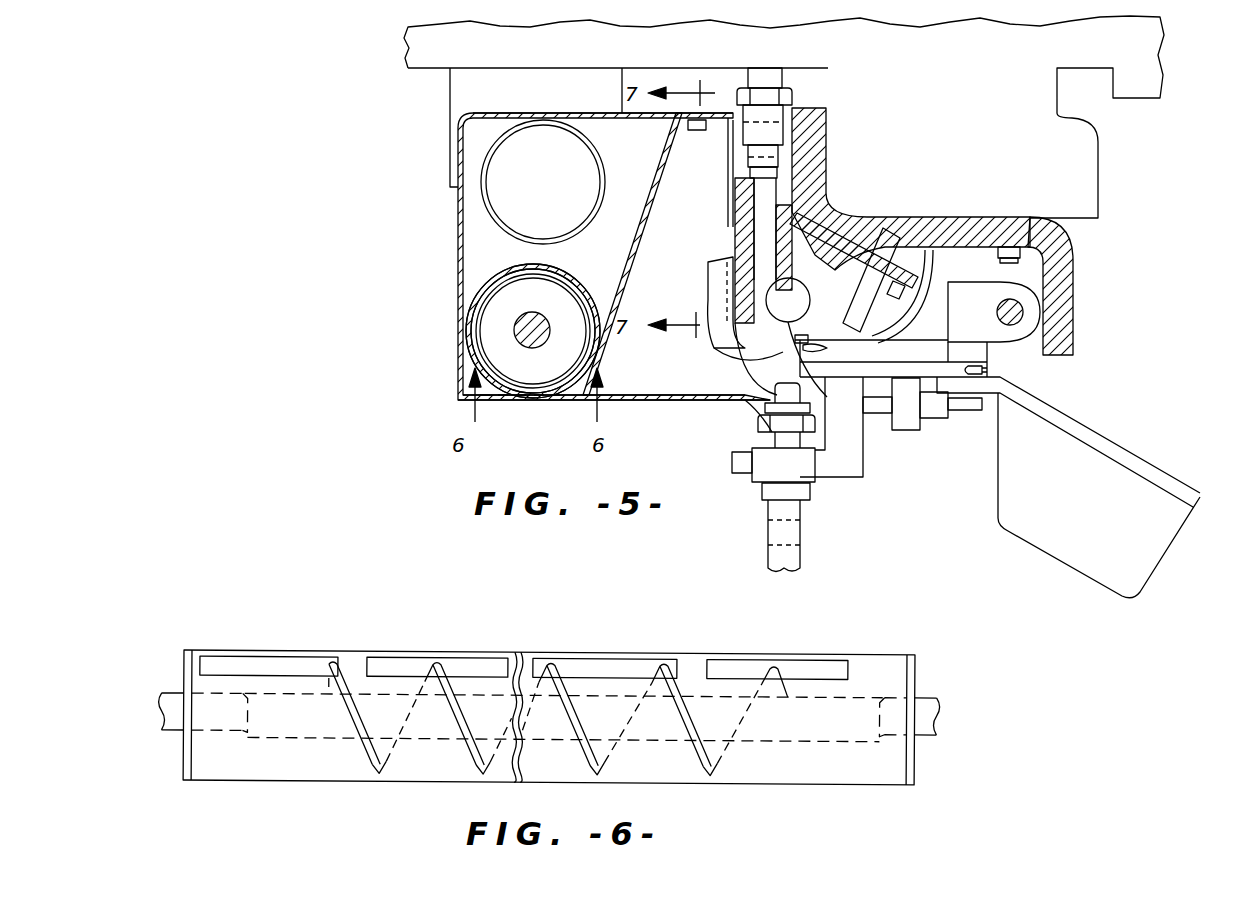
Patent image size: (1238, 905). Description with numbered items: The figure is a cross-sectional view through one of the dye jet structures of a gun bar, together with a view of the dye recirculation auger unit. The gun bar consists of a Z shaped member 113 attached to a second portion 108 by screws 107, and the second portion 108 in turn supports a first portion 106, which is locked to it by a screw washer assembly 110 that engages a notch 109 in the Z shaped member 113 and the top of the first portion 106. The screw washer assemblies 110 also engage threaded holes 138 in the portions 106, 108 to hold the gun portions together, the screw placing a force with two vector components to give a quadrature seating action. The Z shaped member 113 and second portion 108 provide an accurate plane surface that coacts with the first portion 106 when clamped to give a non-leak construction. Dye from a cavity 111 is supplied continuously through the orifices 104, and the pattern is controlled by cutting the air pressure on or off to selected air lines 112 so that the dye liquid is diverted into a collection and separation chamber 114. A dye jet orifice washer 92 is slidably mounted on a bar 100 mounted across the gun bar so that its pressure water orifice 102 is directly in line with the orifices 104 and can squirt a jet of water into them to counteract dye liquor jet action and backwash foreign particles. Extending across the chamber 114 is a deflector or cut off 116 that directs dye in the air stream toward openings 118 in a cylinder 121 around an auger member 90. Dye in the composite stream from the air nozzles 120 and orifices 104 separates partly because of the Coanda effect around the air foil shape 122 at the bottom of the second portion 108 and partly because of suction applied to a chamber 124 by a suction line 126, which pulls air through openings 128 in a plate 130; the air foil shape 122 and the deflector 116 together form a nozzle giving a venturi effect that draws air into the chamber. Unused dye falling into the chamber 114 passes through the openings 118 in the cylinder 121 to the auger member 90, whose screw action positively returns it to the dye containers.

In FIG. 6, the auger member 90 is at (370, 634).
In FIG. 5, the dye jet orifice washer 92 is at (835, 506).
In FIG. 5, the bar 100 is at (1013, 326).
In FIG. 5, the pressure water orifice 102 is at (752, 408).
In FIG. 5, the orifices of the gun bar 104 is at (798, 330).
In FIG. 5, the first portion 106 is at (823, 277).
In FIG. 5, the screws 107 is at (836, 145).
In FIG. 5, the second portion 108 is at (735, 243).
In FIG. 5, the notch 109 is at (922, 235).
In FIG. 5, the screw washer assembly 110 is at (905, 278).
In FIG. 5, the cavity 111 is at (788, 300).
In FIG. 5, the air lines 112 is at (878, 342).
In FIG. 5, the Z shaped member 113 is at (810, 118).
In FIG. 5, the collection and separation chamber 114 is at (458, 366).
In FIG. 5, the deflector or cut off 116 is at (718, 362).
In FIG. 5, the openings 118 is at (568, 402).
In FIG. 6, the openings 118 is at (283, 664).
In FIG. 5, the air nozzles 120 is at (833, 354).
In FIG. 5, the cylinder 121 is at (466, 312).
In FIG. 6, the cylinder 121 is at (692, 654).
In FIG. 5, the air foil shape 122 is at (725, 315).
In FIG. 5, the chamber 124 is at (459, 245).
In FIG. 5, the suction line 126 is at (488, 184).
In FIG. 5, the openings in the plate 128 is at (670, 152).
In FIG. 5, the plate 130 is at (632, 224).
In FIG. 5, the threaded holes 138 is at (722, 217).